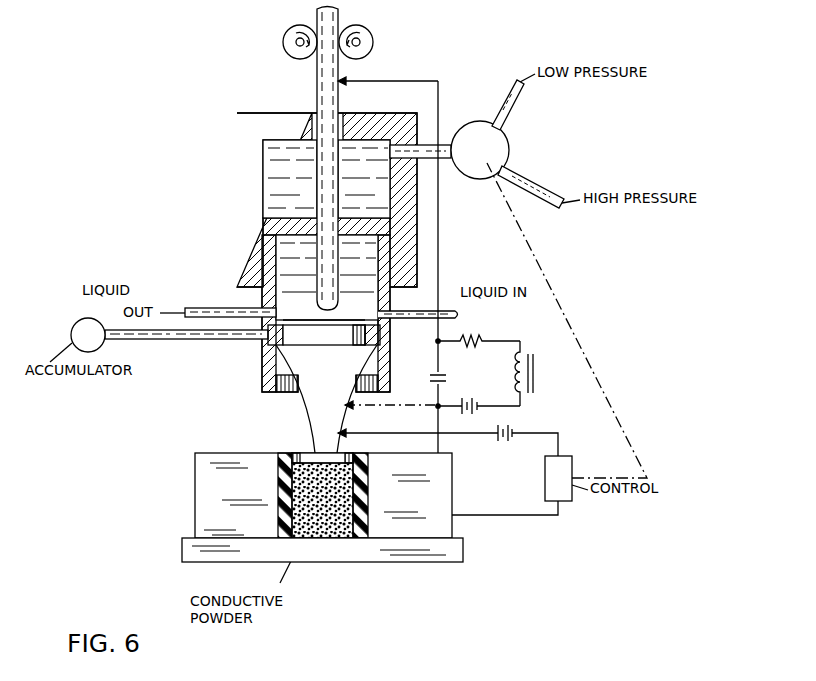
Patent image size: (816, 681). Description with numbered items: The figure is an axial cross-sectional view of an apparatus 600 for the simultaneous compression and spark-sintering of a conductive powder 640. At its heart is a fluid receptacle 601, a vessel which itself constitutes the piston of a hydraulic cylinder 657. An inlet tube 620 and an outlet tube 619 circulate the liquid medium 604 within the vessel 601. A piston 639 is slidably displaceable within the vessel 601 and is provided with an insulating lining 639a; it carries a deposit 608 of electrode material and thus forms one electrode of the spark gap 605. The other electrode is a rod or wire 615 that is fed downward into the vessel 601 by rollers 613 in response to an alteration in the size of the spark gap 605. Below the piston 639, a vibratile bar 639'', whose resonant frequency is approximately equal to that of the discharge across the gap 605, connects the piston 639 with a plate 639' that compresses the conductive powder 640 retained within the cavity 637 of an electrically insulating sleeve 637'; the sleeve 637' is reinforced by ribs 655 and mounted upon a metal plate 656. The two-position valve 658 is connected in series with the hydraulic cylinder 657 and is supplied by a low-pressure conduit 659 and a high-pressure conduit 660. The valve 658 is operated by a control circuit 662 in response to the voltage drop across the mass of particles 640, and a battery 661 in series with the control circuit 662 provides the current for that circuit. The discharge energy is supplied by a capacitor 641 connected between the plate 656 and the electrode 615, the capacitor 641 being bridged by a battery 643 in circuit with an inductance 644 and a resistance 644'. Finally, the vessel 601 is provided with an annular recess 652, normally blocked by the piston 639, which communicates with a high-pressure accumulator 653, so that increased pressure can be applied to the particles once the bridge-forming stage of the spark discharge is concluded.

The apparatus 600 is at (153, 518).
The fluid receptacle 601 is at (262, 390).
The liquid medium 604 is at (363, 250).
The spark gap 605 is at (292, 272).
The deposit of electrode material 608 is at (272, 282).
The rollers 613 is at (362, 26).
The rod or wire electrode 615 is at (310, 178).
The outlet tube 619 is at (236, 308).
The inlet tube 620 is at (433, 311).
The cavity 637 is at (322, 536).
The electrically insulating sleeve 637' is at (395, 536).
The piston 639 is at (269, 364).
The insulating lining 639a is at (283, 340).
The plate 639' is at (351, 448).
The vibratile bar 639'' is at (314, 399).
The conductive powder 640 is at (315, 470).
The capacitor 641 is at (442, 375).
The battery 643 is at (470, 400).
The inductance 644 is at (544, 373).
The resistance 644' is at (484, 329).
The annular recess 652 is at (384, 348).
The high-pressure accumulator 653 is at (78, 320).
The ribs 655 is at (210, 520).
The metal plate 656 is at (463, 562).
The hydraulic cylinder 657 is at (237, 113).
The two-position valve 658 is at (505, 130).
The low-pressure conduit 659 is at (500, 103).
The high-pressure conduit 660 is at (520, 166).
The battery 661 is at (500, 440).
The control circuit 662 is at (572, 500).